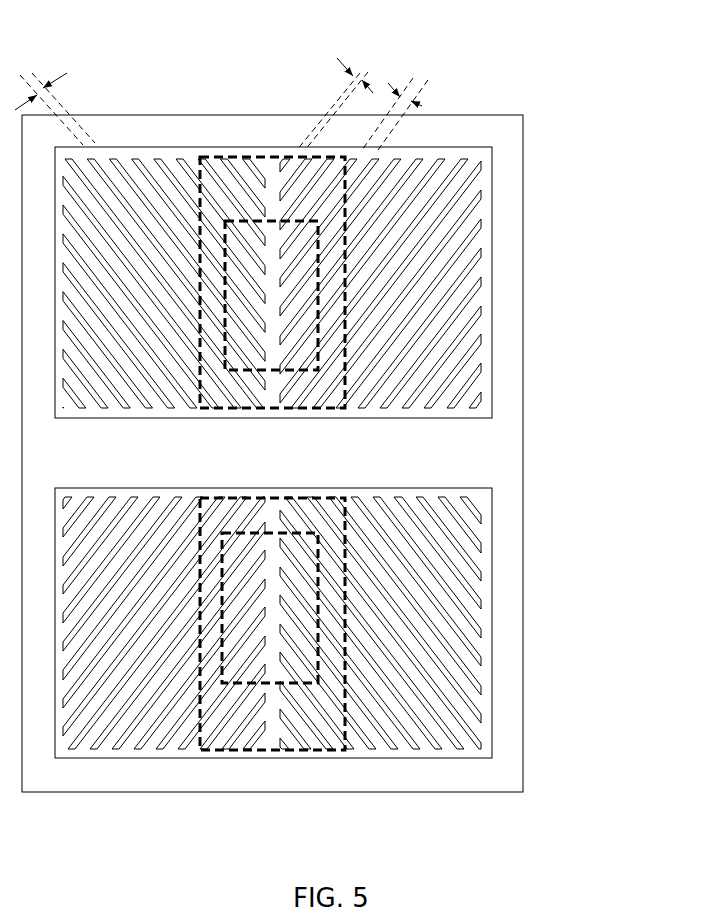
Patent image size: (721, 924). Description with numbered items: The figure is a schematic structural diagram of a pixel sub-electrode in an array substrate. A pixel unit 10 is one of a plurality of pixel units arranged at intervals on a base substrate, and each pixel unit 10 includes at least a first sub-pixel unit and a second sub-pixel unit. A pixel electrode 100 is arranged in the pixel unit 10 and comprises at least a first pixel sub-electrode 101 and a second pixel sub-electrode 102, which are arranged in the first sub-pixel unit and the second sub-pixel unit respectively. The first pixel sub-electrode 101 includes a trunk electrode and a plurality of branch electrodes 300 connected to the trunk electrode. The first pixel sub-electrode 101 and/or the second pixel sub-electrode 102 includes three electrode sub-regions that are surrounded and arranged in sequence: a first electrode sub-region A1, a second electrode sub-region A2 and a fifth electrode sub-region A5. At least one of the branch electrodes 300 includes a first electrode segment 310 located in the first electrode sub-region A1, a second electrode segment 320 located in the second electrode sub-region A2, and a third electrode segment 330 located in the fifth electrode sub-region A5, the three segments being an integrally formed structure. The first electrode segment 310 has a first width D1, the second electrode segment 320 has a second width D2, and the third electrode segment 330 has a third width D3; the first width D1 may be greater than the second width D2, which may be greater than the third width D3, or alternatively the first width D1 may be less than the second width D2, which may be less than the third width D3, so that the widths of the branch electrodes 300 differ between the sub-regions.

The pixel unit 10 is at (510, 85).
The pixel electrode 100 is at (614, 388).
The first pixel sub-electrode 101 is at (492, 418).
The second pixel sub-electrode 102 is at (492, 488).
The branch electrodes 300 is at (612, 272).
The first electrode segment 310 is at (330, 200).
The second electrode segment 320 is at (334, 259).
The third electrode segment 330 is at (306, 225).
The first electrode sub-region A1 is at (273, 157).
The second electrode sub-region A2 is at (478, 163).
The fifth electrode sub-region A5 is at (230, 160).
The first width D1 is at (335, 96).
The second width D2 is at (55, 96).
The third width D3 is at (407, 114).